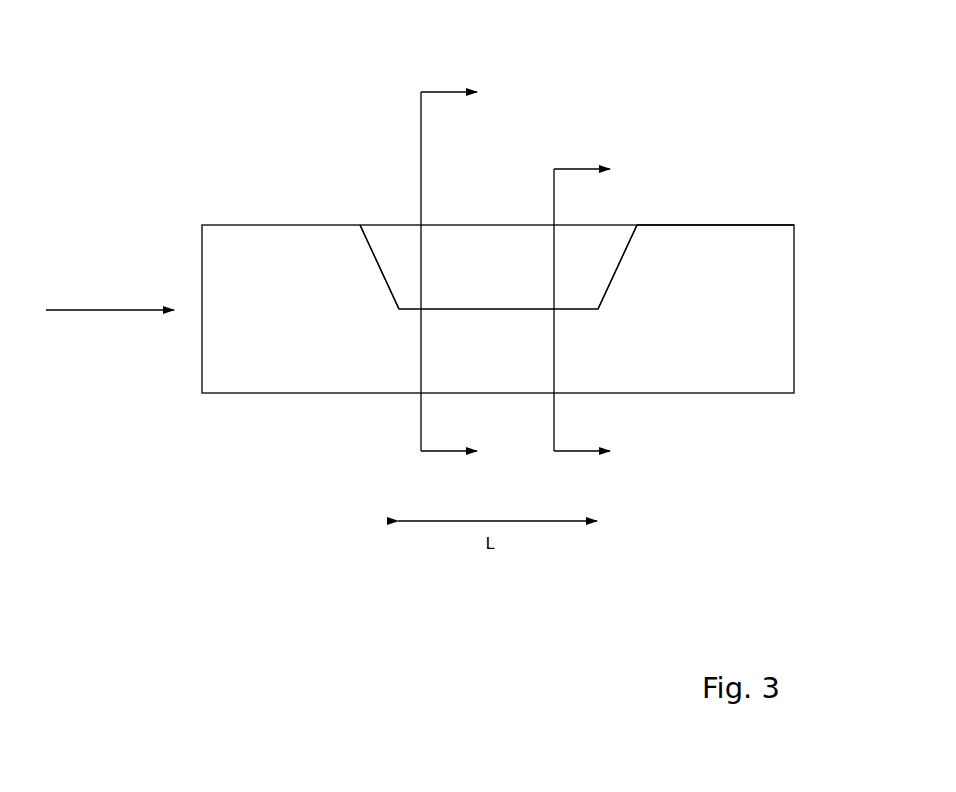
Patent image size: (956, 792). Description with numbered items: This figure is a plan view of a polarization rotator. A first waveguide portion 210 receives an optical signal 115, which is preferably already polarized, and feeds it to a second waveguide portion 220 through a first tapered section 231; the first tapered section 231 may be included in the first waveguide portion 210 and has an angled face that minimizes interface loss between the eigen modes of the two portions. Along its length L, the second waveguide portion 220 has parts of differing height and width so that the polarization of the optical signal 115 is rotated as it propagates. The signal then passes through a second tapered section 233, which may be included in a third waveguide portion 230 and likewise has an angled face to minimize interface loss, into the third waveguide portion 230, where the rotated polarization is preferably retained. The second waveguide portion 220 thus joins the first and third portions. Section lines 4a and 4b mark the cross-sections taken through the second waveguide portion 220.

The optical signal 115 is at (95, 310).
The first waveguide portion 210 is at (265, 410).
The second waveguide portion 220 is at (518, 203).
The third waveguide portion 230 is at (745, 212).
The first tapered section 231 is at (378, 288).
The second tapered section 233 is at (631, 288).
The section line 4a is at (460, 275).
The section line 4b is at (600, 309).